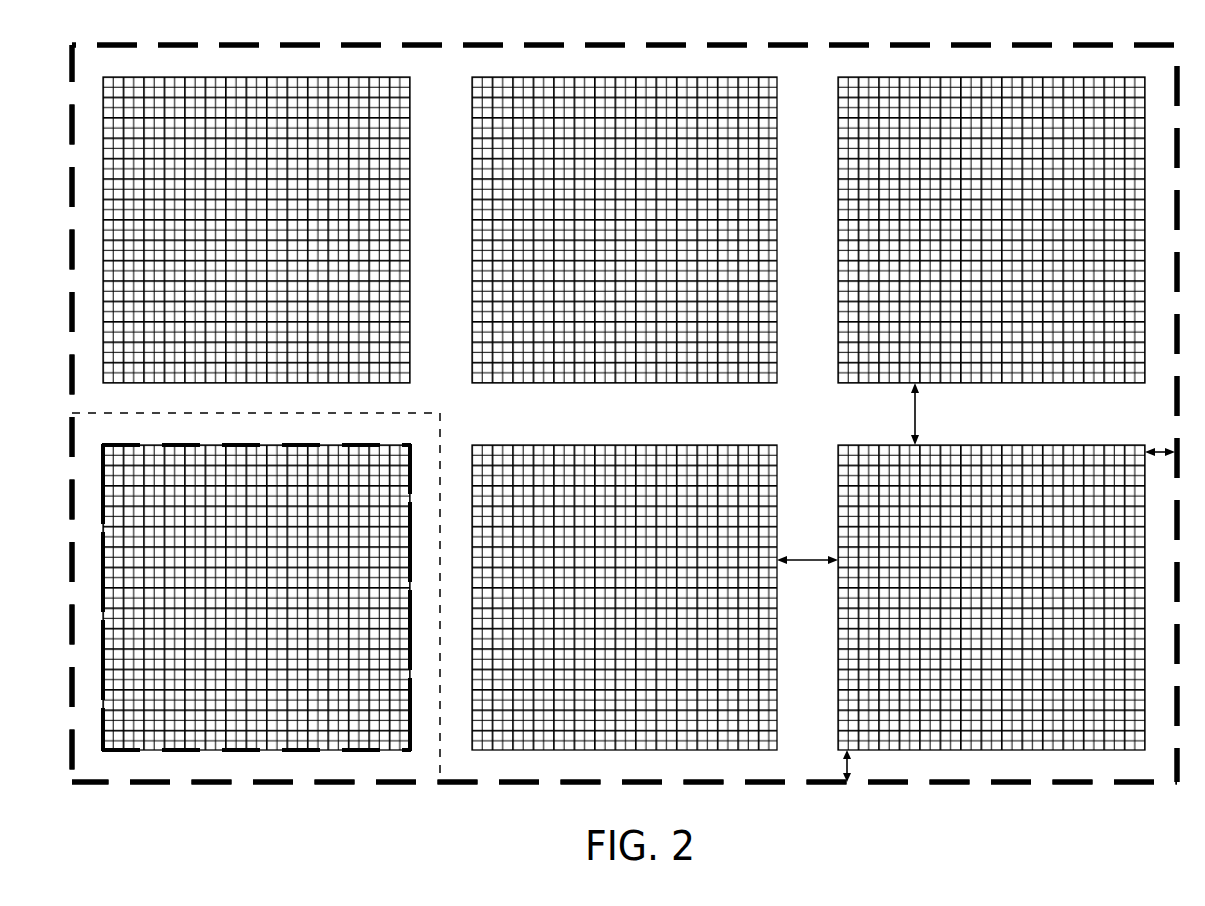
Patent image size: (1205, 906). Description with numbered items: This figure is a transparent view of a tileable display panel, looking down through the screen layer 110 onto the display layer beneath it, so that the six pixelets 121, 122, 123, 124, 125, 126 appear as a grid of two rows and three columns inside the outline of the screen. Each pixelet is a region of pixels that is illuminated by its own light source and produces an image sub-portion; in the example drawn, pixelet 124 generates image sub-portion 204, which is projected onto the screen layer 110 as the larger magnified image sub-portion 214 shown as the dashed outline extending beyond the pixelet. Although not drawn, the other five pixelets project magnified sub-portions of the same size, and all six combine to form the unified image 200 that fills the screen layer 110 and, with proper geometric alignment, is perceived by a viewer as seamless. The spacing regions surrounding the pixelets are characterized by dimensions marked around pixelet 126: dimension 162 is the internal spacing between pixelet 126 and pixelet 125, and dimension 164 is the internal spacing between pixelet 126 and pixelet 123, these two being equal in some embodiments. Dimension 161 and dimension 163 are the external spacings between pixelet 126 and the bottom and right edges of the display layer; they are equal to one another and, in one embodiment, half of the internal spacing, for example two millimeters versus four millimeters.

The unified image 200 is at (236, 33).
The screen layer 110 is at (1045, 765).
The pixelet 121 is at (395, 305).
The pixelet 122 is at (770, 304).
The pixelet 123 is at (862, 110).
The pixelet 124 is at (188, 465).
The pixelet 125 is at (717, 452).
The pixelet 126 is at (877, 462).
The image sub-portion 204 is at (370, 752).
The magnified image sub-portion 214 is at (440, 432).
The dimension 161 is at (843, 766).
The dimension 162 is at (815, 562).
The dimension 163 is at (1160, 448).
The dimension 164 is at (918, 414).